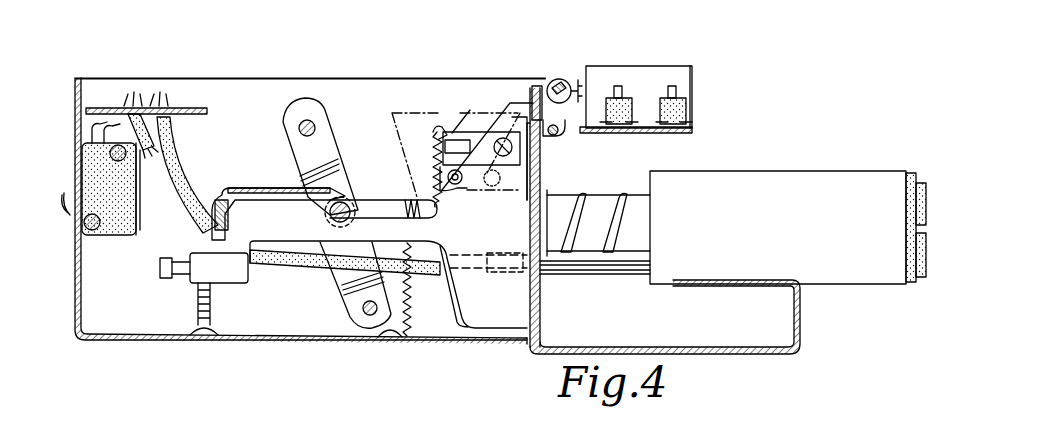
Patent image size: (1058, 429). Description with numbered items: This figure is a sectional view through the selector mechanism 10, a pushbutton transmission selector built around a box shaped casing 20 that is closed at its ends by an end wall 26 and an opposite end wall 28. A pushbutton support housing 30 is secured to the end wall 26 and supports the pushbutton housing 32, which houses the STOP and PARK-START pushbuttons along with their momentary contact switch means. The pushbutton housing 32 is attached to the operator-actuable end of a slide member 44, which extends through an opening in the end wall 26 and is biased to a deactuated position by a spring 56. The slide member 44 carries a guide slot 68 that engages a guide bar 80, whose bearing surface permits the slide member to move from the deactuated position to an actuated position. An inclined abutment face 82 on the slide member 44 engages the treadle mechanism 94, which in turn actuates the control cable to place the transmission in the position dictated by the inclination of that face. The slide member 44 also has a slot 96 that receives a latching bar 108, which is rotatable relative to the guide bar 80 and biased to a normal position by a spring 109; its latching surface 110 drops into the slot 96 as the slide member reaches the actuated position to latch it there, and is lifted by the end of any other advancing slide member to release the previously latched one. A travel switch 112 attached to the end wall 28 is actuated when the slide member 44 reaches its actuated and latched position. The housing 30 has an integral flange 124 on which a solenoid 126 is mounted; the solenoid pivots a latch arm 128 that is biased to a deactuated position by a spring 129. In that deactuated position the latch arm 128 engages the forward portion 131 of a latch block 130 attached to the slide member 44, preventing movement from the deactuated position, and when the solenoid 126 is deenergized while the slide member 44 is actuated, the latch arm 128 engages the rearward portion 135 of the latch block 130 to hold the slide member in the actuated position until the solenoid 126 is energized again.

The selector mechanism 10 is at (380, 66).
The casing 20 is at (251, 348).
The end wall 26 is at (536, 92).
The end wall 28 is at (76, 330).
The pushbutton support housing 30 is at (723, 355).
The pushbutton housing 32 is at (828, 275).
The slide member 44 is at (594, 211).
The spring 56 is at (623, 226).
The guide slot 68 is at (386, 205).
The guide bar 80 is at (342, 204).
The abutment face 82 is at (458, 328).
The treadle mechanism 94 is at (339, 120).
The slot 96 is at (318, 210).
The latching bar 108 is at (250, 188).
The spring 109 is at (196, 302).
The latching surface 110 is at (222, 206).
The travel switch 112 is at (138, 186).
The integral flange 124 is at (676, 132).
The solenoid 126 is at (686, 76).
The latch arm 128 is at (560, 128).
The spring 129 is at (402, 284).
The latch block 130 is at (442, 185).
The forward portion 131 is at (439, 130).
The rearward portion 135 is at (496, 186).